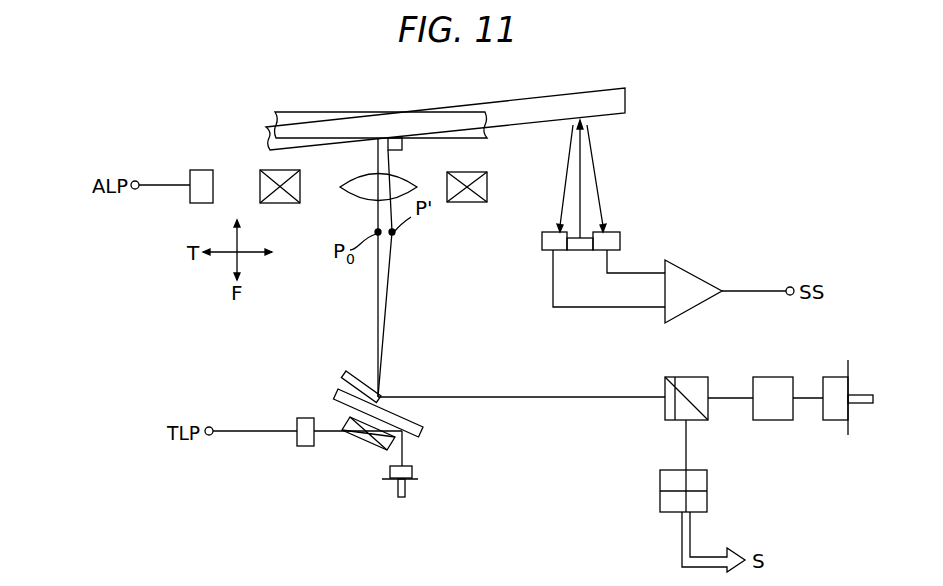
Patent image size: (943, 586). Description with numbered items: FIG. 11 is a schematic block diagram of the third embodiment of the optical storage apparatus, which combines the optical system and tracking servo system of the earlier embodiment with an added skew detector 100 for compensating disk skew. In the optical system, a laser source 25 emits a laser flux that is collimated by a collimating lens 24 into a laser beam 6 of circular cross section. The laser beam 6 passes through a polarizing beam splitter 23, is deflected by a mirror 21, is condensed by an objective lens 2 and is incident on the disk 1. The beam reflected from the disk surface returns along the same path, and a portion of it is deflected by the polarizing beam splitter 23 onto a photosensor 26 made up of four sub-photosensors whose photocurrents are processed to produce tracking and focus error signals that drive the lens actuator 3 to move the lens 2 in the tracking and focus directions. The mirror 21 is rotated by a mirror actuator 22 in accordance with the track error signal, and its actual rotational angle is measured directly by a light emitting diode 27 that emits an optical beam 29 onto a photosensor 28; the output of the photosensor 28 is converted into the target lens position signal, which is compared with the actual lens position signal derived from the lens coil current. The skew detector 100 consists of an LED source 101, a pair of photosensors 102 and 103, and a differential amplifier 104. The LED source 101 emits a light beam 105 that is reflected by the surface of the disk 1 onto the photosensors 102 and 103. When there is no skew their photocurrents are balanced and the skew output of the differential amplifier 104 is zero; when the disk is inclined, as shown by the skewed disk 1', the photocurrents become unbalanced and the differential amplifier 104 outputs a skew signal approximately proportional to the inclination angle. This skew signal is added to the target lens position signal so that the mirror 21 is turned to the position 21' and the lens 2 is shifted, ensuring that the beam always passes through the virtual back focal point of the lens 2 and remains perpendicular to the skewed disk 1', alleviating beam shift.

The disk 1 is at (381, 101).
The disk with skew 1' is at (445, 107).
The objective lens 2 is at (350, 198).
The lens actuator 3 is at (483, 202).
The laser beam 6 is at (548, 411).
The mirror 21 is at (357, 392).
The mirror rotated position 21' is at (352, 375).
The mirror actuator 22 is at (366, 450).
The polarizing beam splitter 23 is at (698, 377).
The collimating lens 24 is at (784, 377).
The laser source 25 is at (852, 377).
The photosensor 26 is at (708, 500).
The light emitting diode 27 is at (408, 490).
The photosensor 28 is at (297, 442).
The optical beam 29 is at (205, 170).
The skew detector 100 is at (642, 237).
The LED source 101 is at (583, 250).
The photosensor 102 is at (615, 232).
The photosensor 103 is at (546, 250).
The differential amplifier 104 is at (698, 281).
The reflected light beam 105 is at (594, 165).